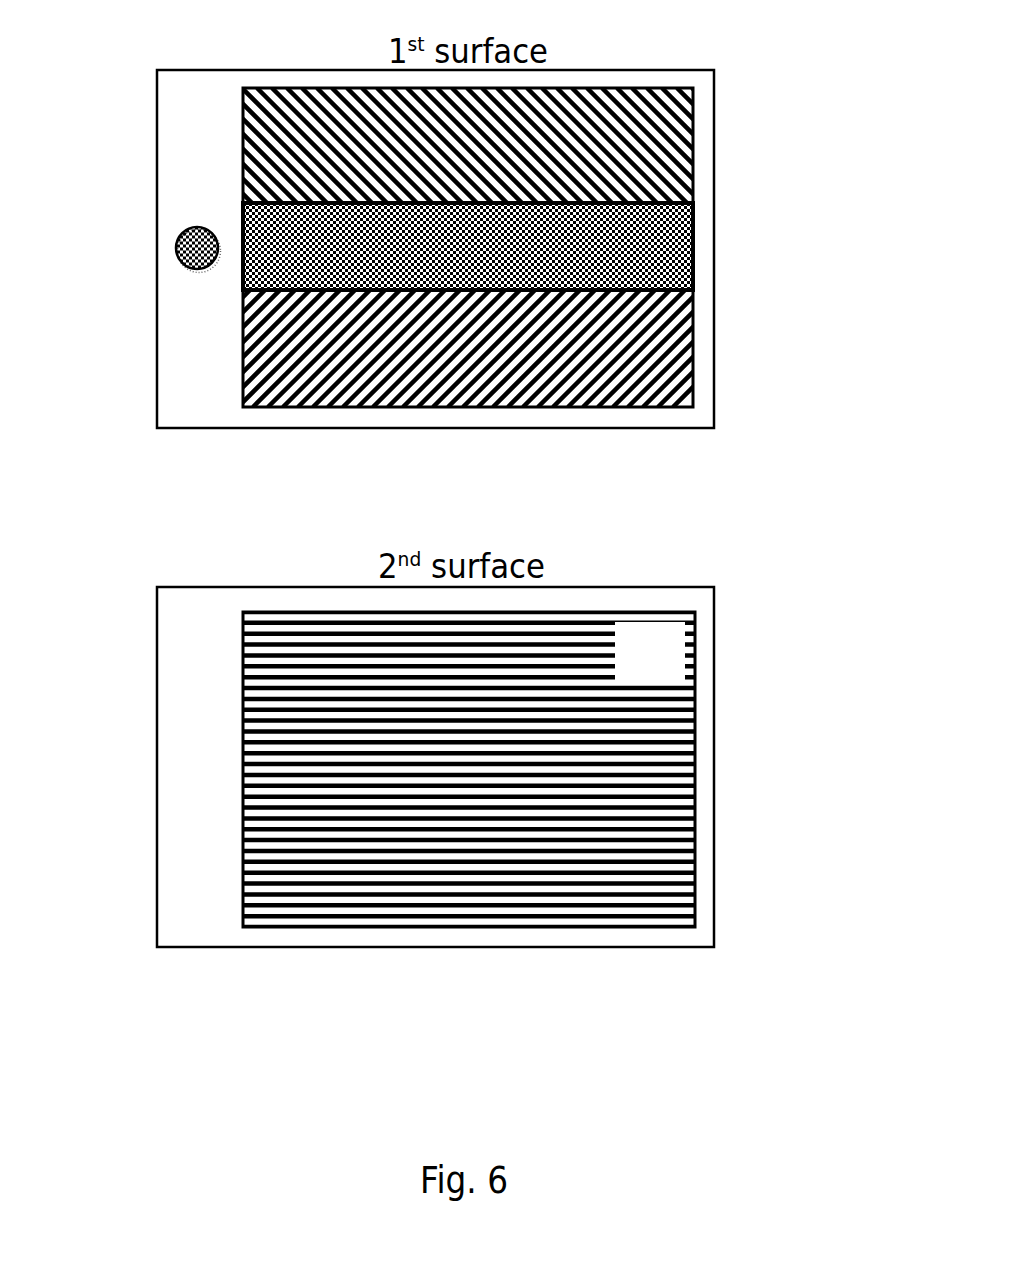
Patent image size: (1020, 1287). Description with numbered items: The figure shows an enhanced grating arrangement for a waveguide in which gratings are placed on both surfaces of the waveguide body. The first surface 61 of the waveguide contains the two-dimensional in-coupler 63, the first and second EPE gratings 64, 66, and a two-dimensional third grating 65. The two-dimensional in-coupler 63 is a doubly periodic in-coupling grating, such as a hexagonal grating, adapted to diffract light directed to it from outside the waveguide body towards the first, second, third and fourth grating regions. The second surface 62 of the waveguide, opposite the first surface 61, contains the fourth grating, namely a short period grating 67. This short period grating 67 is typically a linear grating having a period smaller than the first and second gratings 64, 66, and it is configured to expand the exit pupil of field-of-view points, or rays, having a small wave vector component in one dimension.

The first surface 61 is at (156, 420).
The second surface 62 is at (157, 912).
The 2D in-coupler 63 is at (188, 253).
The first EPE grating 64 is at (243, 122).
The 2D third grating 65 is at (688, 235).
The second EPE grating 66 is at (570, 400).
The short period grating 67 is at (562, 907).